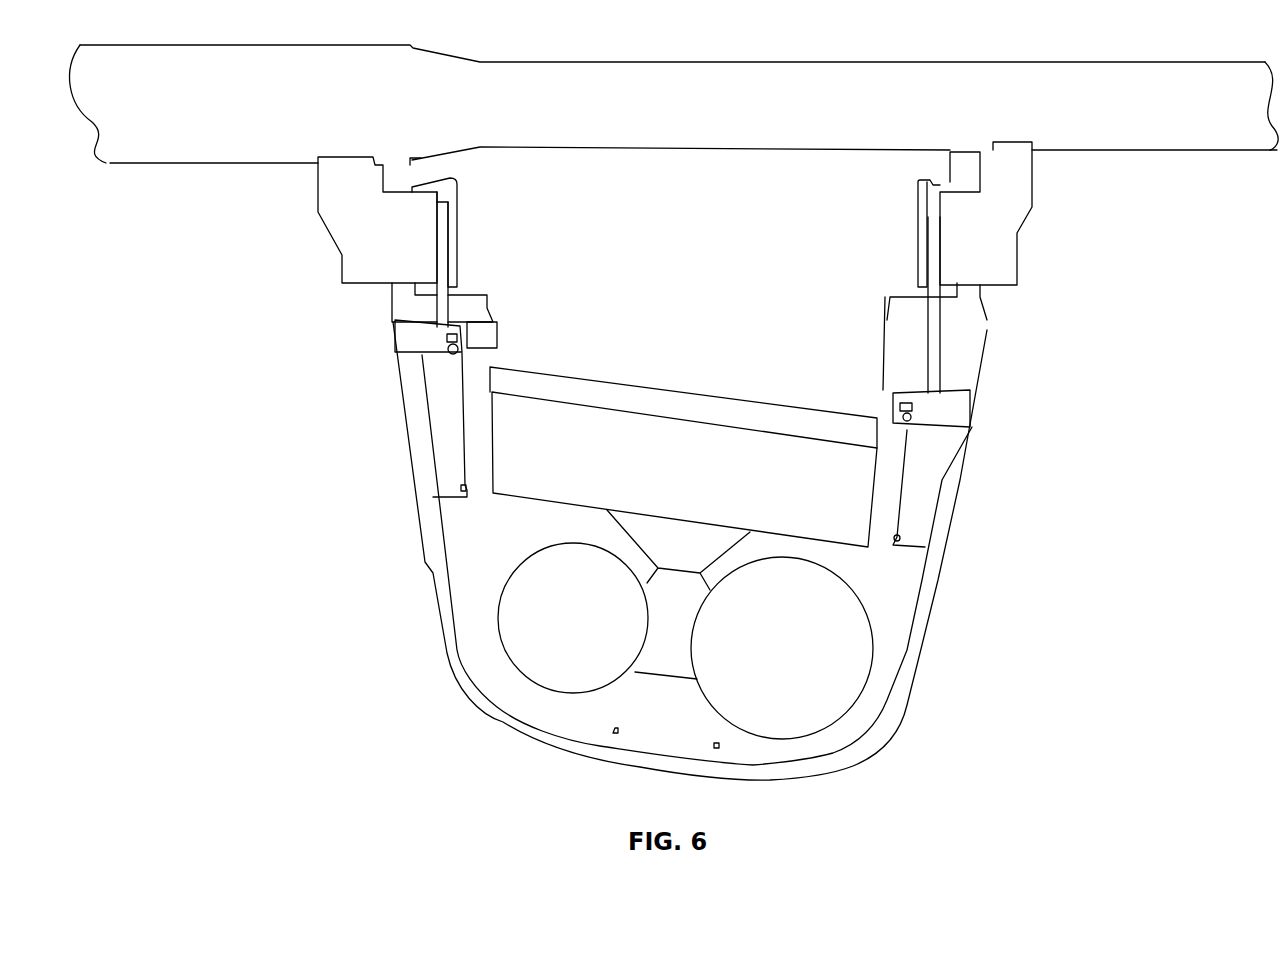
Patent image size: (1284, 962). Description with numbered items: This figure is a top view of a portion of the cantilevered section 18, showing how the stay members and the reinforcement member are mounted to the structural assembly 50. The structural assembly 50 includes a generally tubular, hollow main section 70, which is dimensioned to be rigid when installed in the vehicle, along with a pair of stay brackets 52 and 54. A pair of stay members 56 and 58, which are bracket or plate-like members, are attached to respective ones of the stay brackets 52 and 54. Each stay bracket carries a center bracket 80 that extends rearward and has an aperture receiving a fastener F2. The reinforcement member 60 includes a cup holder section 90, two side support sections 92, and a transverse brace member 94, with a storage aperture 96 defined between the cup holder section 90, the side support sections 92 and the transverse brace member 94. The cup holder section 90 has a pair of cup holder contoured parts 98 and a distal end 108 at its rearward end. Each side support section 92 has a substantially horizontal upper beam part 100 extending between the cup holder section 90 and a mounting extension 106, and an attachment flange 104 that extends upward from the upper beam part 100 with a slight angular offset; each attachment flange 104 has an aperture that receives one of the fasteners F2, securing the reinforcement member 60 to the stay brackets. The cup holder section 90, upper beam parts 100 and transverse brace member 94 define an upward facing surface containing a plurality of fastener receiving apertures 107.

The cantilevered section 18 is at (350, 537).
The structural assembly 50 is at (604, 60).
The stay bracket 52 is at (318, 183).
The stay bracket 54 is at (1032, 175).
The stay member 56 is at (462, 183).
The stay member 58 is at (918, 194).
The reinforcement member 60 is at (940, 603).
The main section 70 is at (886, 62).
The center bracket 80 is at (495, 335).
The cup holder section 90 is at (845, 657).
The side support section 92 is at (402, 395).
The transverse brace member 94 is at (690, 398).
The storage aperture 96 is at (820, 462).
The cup holder contoured part 98 is at (622, 677).
The upper beam part 100 is at (437, 465).
The attachment flange 104 is at (463, 326).
The mounting extension 106 is at (392, 290).
The fastener receiving aperture 107 is at (467, 488).
The distal end 108 is at (632, 767).
The fastener F2 is at (440, 347).